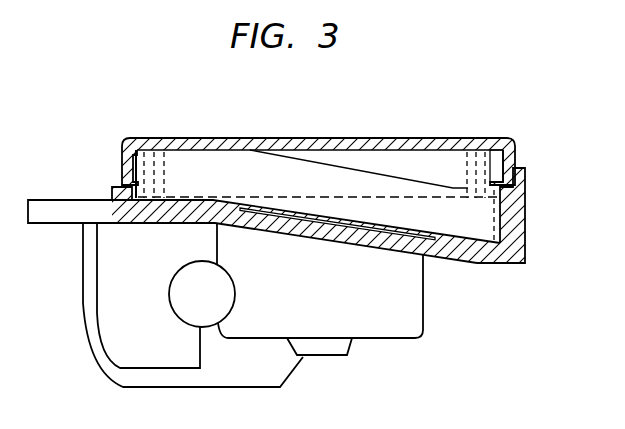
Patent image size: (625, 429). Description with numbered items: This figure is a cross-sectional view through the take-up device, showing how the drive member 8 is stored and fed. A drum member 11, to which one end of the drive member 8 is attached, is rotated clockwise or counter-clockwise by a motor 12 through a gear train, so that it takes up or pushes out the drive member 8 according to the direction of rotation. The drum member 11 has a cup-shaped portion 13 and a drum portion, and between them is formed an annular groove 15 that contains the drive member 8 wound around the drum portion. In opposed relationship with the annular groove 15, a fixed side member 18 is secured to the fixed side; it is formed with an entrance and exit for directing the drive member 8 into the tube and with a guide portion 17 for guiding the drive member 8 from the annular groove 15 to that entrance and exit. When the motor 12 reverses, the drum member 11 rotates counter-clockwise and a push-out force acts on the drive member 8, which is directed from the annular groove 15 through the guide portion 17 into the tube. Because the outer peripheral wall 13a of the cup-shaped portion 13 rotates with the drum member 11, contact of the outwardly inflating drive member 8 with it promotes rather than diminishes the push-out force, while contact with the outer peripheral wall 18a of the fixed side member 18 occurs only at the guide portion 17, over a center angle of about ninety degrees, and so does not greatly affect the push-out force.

The drive member 8 is at (478, 213).
The drum member 11 is at (403, 139).
The motor 12 is at (105, 312).
The cup-shaped portion 13 is at (181, 144).
The outer peripheral wall 13a is at (512, 141).
The annular groove 15 is at (497, 166).
The guide portion 17 is at (431, 244).
The fixed side member 18 is at (353, 233).
The outer peripheral wall 18a is at (518, 243).